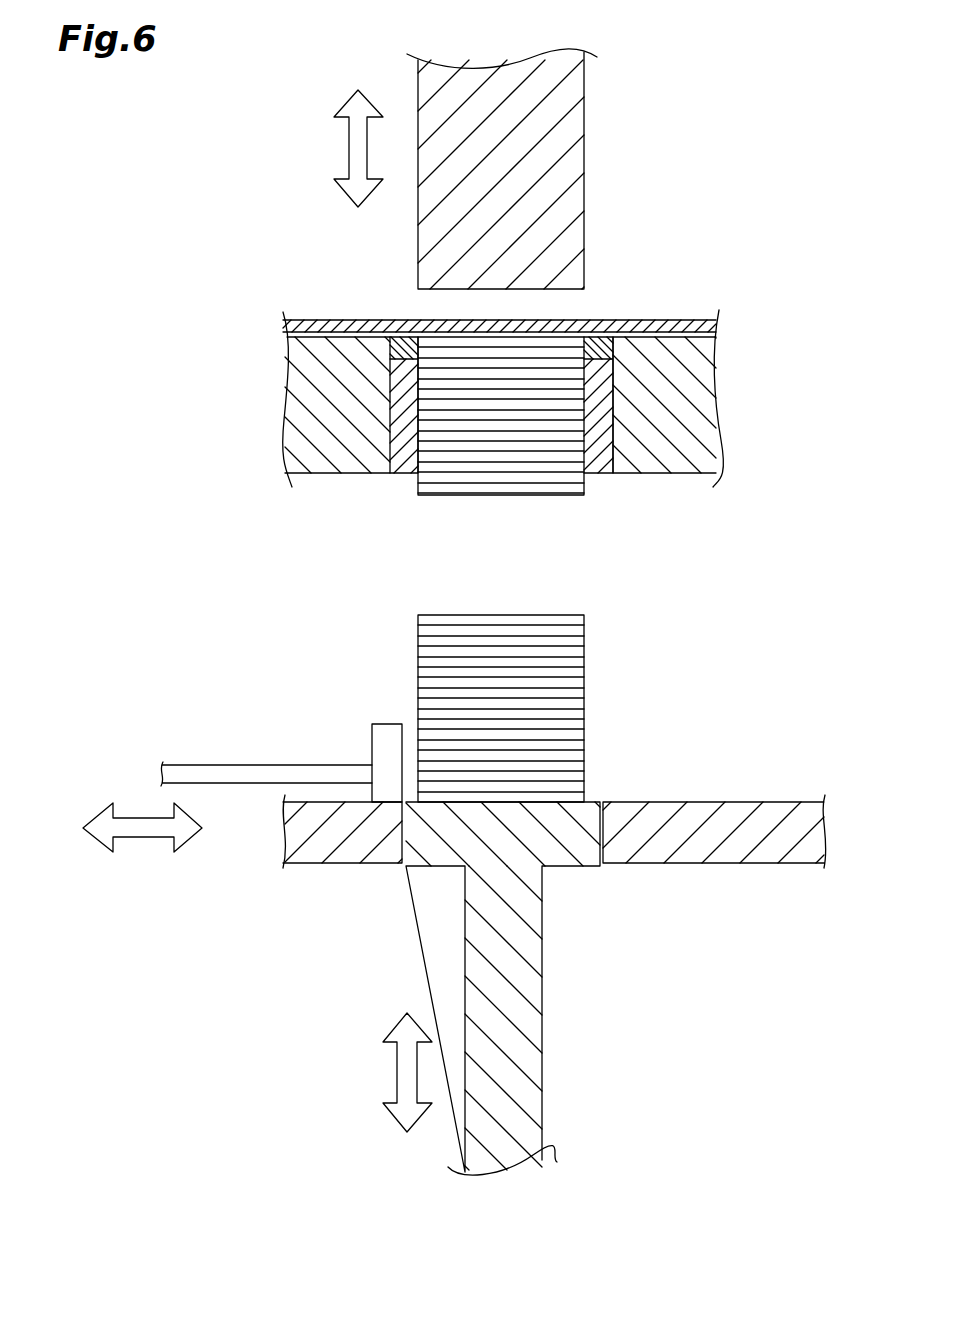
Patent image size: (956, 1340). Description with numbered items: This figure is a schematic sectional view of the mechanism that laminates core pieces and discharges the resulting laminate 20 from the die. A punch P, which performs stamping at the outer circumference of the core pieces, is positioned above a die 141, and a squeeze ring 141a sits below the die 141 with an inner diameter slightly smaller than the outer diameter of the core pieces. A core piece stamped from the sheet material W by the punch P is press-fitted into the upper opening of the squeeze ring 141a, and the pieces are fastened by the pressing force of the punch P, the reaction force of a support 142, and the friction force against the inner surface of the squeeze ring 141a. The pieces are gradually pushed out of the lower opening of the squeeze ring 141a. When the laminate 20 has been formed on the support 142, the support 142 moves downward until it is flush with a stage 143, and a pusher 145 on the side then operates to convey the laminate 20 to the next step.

The punch P is at (572, 163).
The workpiece (steel sheet) W is at (357, 320).
The die 141 is at (540, 372).
The squeeze ring 141a is at (605, 392).
The laminate 20 is at (585, 753).
The support 142 is at (572, 840).
The stage 143 is at (727, 808).
The pusher 145 is at (232, 775).